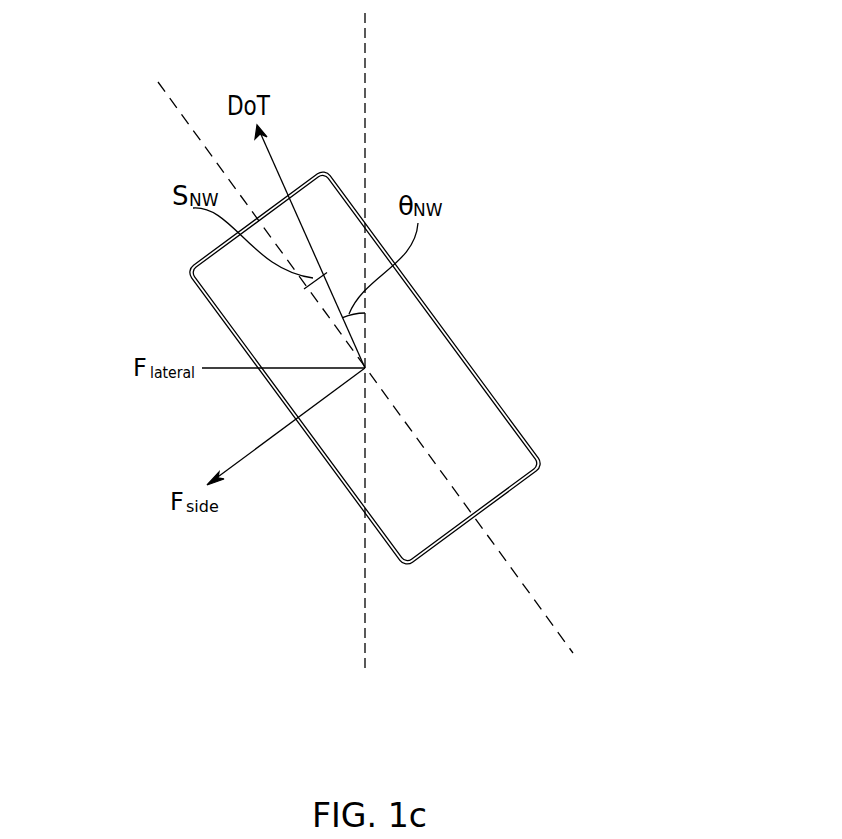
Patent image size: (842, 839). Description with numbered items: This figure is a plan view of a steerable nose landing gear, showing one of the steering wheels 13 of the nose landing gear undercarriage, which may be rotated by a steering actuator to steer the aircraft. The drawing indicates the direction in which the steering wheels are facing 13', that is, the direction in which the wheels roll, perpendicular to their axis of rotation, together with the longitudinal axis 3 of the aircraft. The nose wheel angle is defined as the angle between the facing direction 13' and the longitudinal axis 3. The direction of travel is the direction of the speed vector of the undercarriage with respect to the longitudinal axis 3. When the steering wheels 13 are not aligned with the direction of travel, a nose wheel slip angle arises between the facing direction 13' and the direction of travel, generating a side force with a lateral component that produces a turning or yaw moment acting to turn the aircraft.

The longitudinal axis 3 is at (367, 52).
The steering wheel 13 is at (389, 367).
The direction in which the steering wheels are facing 13' is at (332, 367).